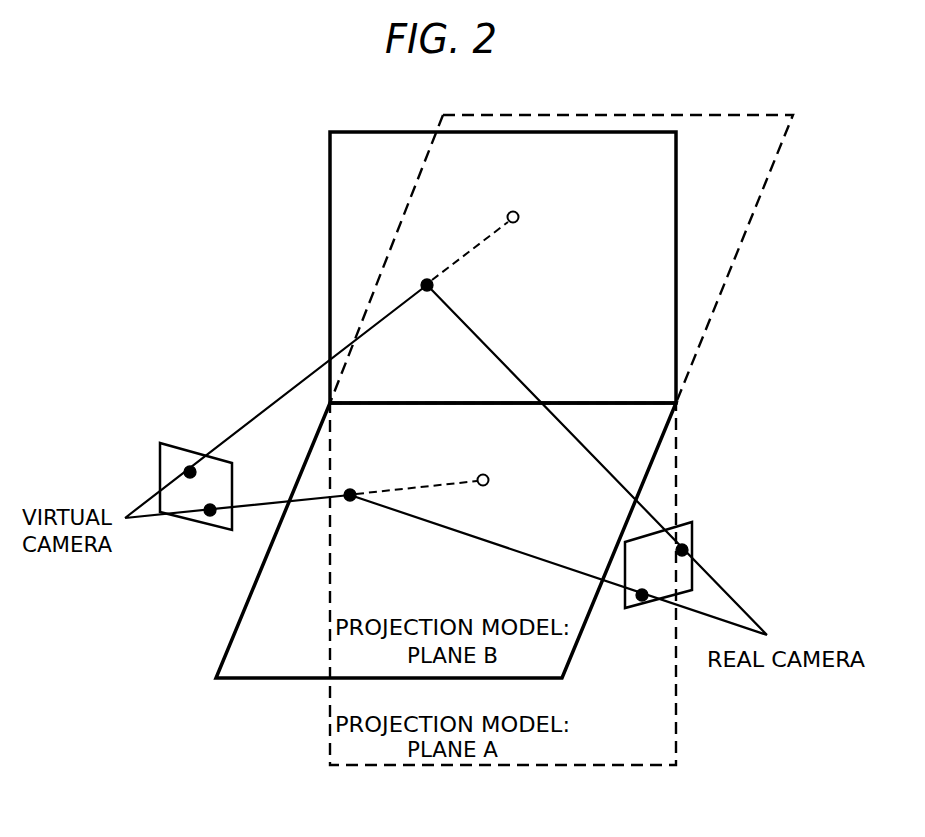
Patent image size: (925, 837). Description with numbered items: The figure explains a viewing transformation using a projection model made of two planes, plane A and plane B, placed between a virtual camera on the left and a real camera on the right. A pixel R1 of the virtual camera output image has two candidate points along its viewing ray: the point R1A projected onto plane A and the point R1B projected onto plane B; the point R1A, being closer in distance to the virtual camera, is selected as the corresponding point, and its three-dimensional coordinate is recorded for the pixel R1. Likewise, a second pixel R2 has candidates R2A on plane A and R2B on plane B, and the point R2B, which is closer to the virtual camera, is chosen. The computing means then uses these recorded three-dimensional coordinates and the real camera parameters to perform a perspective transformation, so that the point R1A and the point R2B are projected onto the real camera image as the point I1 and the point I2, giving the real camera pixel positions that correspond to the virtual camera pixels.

The pixel of the output image R1 is at (190, 466).
The pixel of the output image R2 is at (210, 516).
The point on plane A R1A is at (538, 288).
The point on plane B R1B is at (543, 230).
The point on plane A R2A is at (485, 503).
The point on plane B R2B is at (350, 489).
The point on the real camera I1 is at (688, 547).
The point on the real camera I2 is at (642, 601).